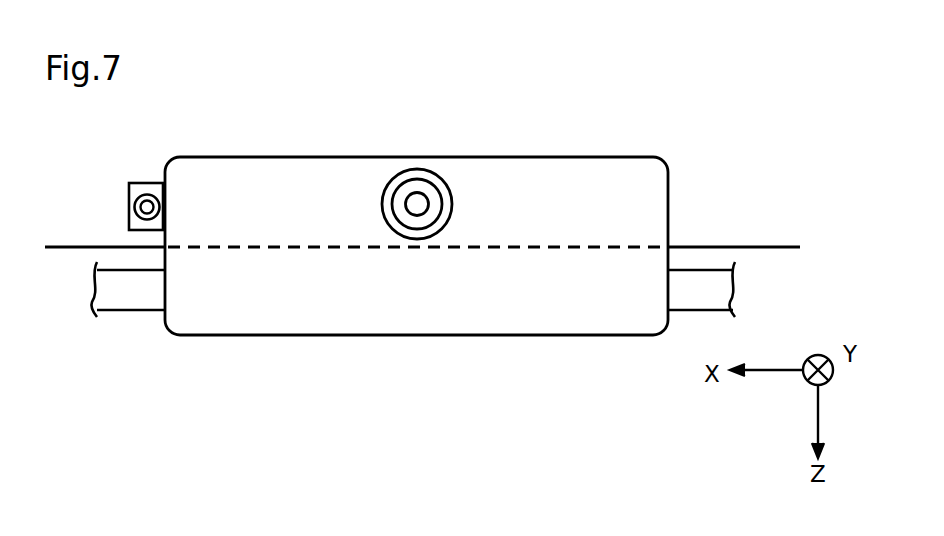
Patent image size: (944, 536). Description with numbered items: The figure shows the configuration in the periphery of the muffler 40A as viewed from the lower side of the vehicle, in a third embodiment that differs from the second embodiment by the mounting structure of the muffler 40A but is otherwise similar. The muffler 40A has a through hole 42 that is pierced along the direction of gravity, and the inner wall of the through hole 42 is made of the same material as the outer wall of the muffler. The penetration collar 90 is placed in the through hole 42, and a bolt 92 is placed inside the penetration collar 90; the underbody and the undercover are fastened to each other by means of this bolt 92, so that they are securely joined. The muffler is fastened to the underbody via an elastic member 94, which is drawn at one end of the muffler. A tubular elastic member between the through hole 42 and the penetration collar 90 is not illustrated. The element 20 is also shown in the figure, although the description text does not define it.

The fixing rail 20 is at (787, 250).
The muffler 40A is at (403, 336).
The through hole 42 is at (425, 180).
The penetration collar 90 is at (407, 190).
The bolt 92 is at (422, 203).
The elastic member 94 is at (157, 193).